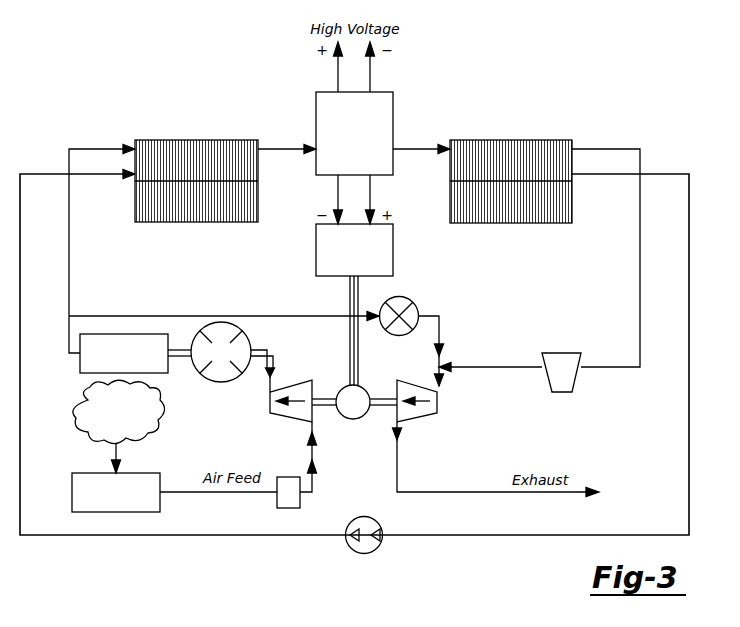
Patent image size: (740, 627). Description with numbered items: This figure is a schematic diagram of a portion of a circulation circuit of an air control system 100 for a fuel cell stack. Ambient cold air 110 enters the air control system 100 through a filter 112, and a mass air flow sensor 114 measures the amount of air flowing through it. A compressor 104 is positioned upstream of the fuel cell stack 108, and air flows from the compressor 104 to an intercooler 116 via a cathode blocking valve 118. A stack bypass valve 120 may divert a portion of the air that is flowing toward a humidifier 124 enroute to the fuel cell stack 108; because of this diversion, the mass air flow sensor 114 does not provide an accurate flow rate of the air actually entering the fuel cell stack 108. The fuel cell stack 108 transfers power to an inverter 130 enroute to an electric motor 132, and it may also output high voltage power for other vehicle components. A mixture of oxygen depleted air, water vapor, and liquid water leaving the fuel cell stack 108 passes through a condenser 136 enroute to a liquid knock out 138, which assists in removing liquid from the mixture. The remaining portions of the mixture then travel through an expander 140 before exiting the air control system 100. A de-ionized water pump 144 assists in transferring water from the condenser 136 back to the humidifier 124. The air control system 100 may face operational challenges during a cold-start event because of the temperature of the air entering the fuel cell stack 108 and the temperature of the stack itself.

The air control system 100 is at (580, 114).
The compressor 104 is at (288, 385).
The fuel cell stack 108 is at (393, 103).
The ambient cold air 110 is at (75, 393).
The filter 112 is at (115, 512).
The mass air flow sensor 114 is at (277, 500).
The intercooler 116 is at (125, 334).
The cathode blocking valve 118 is at (220, 322).
The stack bypass valve 120 is at (410, 299).
The humidifier 124 is at (197, 140).
The inverter 130 is at (393, 250).
The electric motor 132 is at (340, 388).
The condenser 136 is at (512, 140).
The liquid knock out 138 is at (562, 353).
The expander 140 is at (415, 418).
The de-ionized water pump 144 is at (355, 552).